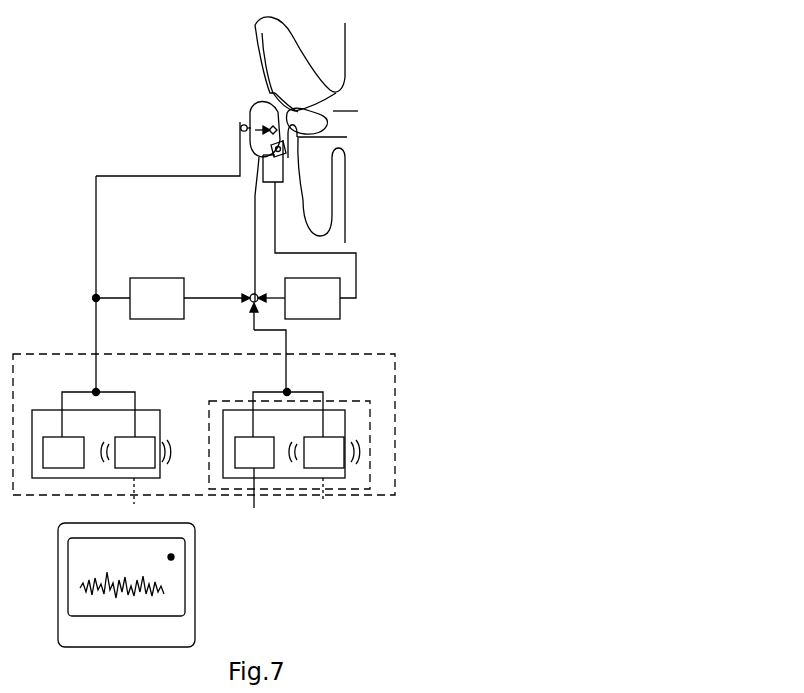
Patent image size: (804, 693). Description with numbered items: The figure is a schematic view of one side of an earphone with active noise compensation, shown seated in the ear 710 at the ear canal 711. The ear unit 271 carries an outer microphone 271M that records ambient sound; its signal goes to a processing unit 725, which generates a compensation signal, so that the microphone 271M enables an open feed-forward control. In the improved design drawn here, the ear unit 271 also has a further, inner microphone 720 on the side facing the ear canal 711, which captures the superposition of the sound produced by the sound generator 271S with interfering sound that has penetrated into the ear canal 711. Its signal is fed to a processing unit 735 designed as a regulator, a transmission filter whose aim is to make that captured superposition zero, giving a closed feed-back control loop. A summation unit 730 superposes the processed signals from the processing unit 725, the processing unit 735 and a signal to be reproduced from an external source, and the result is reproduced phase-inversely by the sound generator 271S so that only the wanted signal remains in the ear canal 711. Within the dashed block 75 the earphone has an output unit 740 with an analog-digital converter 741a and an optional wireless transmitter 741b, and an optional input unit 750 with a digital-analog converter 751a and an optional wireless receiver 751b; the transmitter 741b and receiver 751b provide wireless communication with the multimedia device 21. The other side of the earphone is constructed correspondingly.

The ear (pinna) 710 is at (263, 30).
The ear canal 711 is at (340, 112).
The ear unit 271 is at (252, 101).
The microphone 271M is at (241, 128).
The sound generator 271S is at (320, 135).
The further microphone 720 is at (255, 196).
The processing unit 725 is at (172, 284).
The summation unit 730 is at (243, 331).
The processing unit 735 is at (299, 286).
The audio system 75 is at (397, 392).
The output unit 740 is at (101, 443).
The analog-digital converter 741a is at (58, 437).
The wireless transmitter 741b is at (133, 480).
The input unit 750 is at (292, 437).
The digital-analog converter 751a is at (248, 437).
The wireless receiver 751b is at (333, 437).
The multimedia device 21 is at (126, 585).